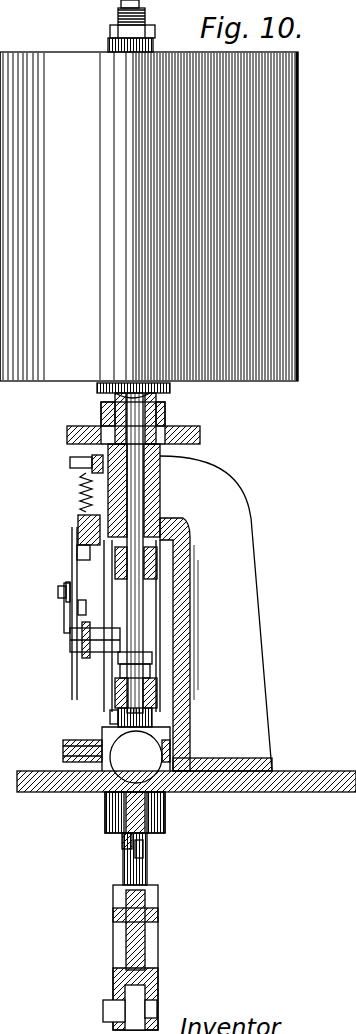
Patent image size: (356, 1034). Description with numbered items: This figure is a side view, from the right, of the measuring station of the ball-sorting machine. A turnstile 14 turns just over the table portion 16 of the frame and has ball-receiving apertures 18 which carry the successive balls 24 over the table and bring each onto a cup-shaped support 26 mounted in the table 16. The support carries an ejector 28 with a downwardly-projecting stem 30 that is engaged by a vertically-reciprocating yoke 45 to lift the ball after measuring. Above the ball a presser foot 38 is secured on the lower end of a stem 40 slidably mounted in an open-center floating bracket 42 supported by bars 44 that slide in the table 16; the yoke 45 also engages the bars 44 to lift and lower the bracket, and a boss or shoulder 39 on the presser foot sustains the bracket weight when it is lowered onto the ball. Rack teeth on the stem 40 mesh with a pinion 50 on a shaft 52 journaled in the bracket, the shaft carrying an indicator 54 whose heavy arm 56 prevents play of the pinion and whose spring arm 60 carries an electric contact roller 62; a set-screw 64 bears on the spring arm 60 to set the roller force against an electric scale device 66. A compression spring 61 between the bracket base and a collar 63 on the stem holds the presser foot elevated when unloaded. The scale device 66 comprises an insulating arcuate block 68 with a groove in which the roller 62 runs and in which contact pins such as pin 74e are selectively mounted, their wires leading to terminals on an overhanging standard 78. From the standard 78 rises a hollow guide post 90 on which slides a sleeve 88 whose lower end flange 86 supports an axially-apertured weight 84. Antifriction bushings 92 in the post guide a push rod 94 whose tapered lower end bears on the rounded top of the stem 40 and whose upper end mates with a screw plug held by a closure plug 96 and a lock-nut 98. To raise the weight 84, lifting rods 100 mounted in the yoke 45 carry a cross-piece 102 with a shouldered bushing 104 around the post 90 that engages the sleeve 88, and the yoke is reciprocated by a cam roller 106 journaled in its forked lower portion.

The turnstile 14 is at (170, 757).
The table portion 16 is at (52, 770).
The ball-receiving apertures 18 is at (170, 733).
The balls 24 is at (128, 745).
The cup-shaped support 26 is at (118, 780).
The ejector 28 is at (132, 792).
The stem 30 is at (148, 857).
The presser foot 38 is at (150, 720).
The boss or shoulder 39 is at (118, 716).
The stem 40 is at (137, 613).
The floating bracket 42 is at (160, 592).
The bars 44 is at (122, 840).
The yoke 45 is at (158, 900).
The pinion 50 is at (152, 658).
The shaft 52 is at (72, 638).
The indicator 54 is at (80, 618).
The arm 56 is at (80, 611).
The spring arm 60 is at (75, 553).
The compression spring 61 is at (127, 672).
The electric contact roller 62 is at (78, 521).
The collar 63 is at (150, 668).
The set-screw 64 is at (57, 592).
The electric scale device 66 is at (148, 500).
The arcuate block 68 is at (78, 522).
The contact pin 74e is at (160, 476).
The standard 78 is at (216, 644).
The weight 84 is at (149, 216).
The lower end flange 86 is at (97, 388).
The sleeve 88 is at (108, 47).
The hollow vertical guide post 90 is at (103, 414).
The antifriction bushings 92 is at (141, 512).
The push rod 94 is at (148, 433).
The closure plug 96 is at (155, 38).
The lock-nut 98 is at (108, 29).
The lifting rods 100 is at (148, 875).
The cross-piece 102 is at (200, 432).
The shouldered bushing 104 is at (165, 408).
The cam roller 106 is at (100, 1032).